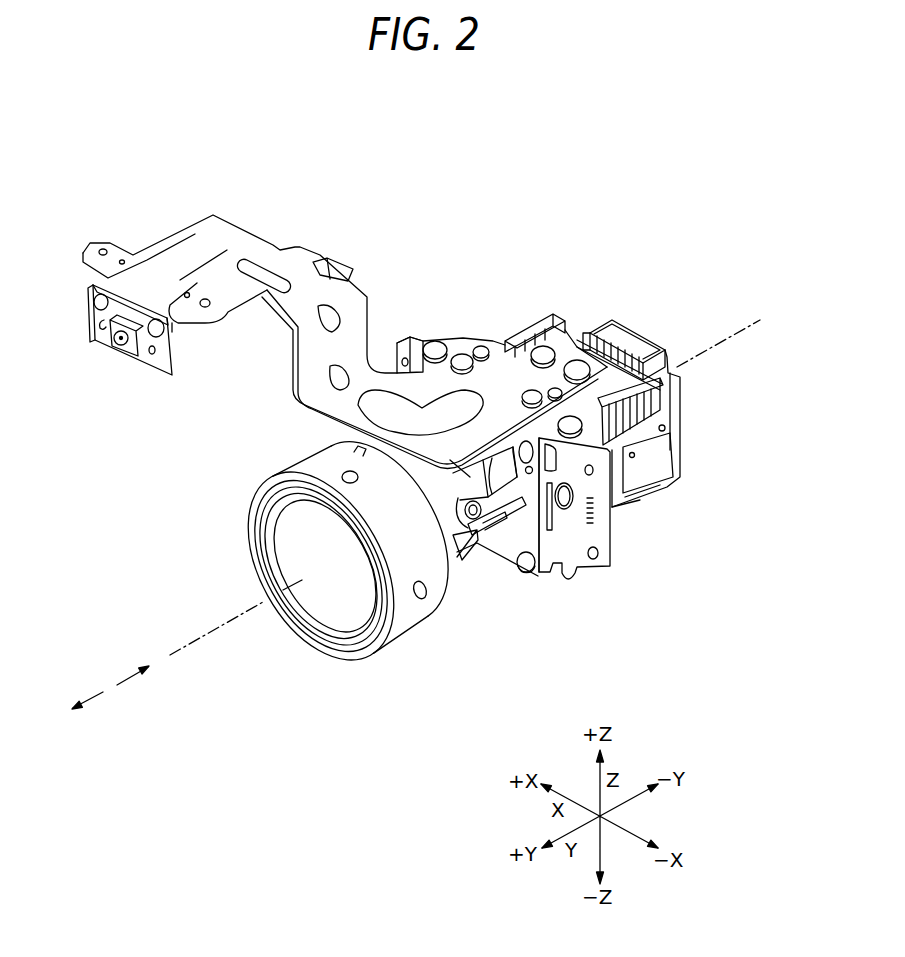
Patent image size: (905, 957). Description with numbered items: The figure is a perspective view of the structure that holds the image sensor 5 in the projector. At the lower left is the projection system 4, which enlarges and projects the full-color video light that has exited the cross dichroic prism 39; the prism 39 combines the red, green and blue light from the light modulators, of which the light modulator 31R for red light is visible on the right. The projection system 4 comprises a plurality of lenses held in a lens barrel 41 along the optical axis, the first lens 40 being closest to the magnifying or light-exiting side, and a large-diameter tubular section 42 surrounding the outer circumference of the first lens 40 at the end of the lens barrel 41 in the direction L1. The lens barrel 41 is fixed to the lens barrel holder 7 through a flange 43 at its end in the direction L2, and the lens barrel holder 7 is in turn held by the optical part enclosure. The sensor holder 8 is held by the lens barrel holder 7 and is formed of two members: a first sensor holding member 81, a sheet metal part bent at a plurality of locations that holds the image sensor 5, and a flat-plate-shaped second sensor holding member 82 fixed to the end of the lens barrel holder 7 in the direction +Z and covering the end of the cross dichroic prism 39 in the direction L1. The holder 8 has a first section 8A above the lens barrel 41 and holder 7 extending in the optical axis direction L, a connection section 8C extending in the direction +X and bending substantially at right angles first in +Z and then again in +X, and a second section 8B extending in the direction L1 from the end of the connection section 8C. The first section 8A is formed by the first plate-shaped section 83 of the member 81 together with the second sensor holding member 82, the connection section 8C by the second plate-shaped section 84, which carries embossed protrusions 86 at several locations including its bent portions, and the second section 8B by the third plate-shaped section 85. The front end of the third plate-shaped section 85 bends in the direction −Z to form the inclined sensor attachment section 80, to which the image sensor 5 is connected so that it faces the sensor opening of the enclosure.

The projection system 4 is at (334, 605).
The first lens 40 is at (328, 603).
The large-diameter tubular section 42 is at (410, 617).
The lens barrel 41 is at (467, 553).
The flange 43 is at (503, 553).
The lens barrel holder 7 is at (567, 555).
The cross dichroic prism 39 is at (578, 340).
The light modulator 31R is at (657, 467).
The sensor holder 8 is at (345, 277).
The first section 8A is at (500, 343).
The second section 8B is at (158, 245).
The connection section 8C is at (323, 293).
The first sensor holding member 81 is at (232, 225).
The second sensor holding member 82 is at (448, 340).
The first plate-shaped section 83 is at (422, 382).
The second plate-shaped section 84 is at (272, 253).
The third plate-shaped section 85 is at (152, 248).
The embossed protrusions 86 is at (323, 412).
The image sensor 5 is at (123, 355).
The sensor attachment section 80 is at (142, 368).
The optical axis direction L is at (190, 642).
The direction L1 is at (81, 691).
The direction L2 is at (132, 663).